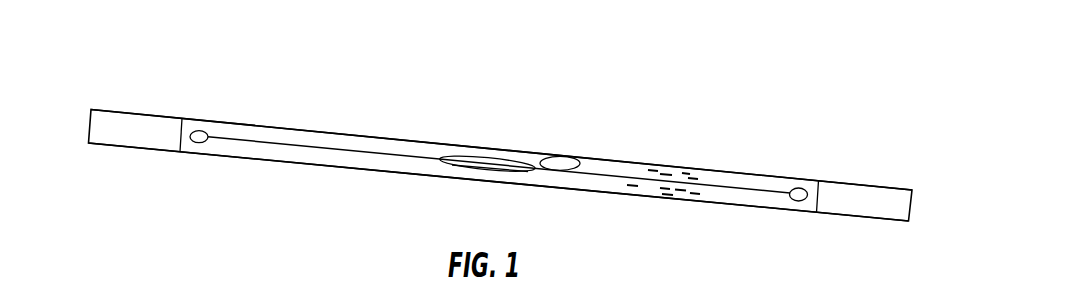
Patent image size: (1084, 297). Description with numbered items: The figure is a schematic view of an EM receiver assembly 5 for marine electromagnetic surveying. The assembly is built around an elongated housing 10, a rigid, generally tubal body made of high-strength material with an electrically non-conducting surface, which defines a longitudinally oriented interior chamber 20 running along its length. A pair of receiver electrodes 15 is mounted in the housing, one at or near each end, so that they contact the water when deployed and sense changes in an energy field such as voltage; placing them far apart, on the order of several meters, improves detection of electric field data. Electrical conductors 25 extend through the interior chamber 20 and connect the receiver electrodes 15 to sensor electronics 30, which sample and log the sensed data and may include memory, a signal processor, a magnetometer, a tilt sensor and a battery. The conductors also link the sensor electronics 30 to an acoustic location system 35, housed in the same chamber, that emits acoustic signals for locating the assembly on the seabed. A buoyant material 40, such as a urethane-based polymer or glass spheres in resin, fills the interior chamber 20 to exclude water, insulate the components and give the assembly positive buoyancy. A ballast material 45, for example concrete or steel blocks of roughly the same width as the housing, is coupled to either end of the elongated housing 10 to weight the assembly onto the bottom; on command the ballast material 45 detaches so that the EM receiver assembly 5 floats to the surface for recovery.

The EM receiver assembly 5 is at (660, 105).
The elongated housing 10 is at (692, 167).
The receiver electrodes 15 is at (199, 143).
The interior chamber 20 is at (374, 146).
The electrical conductors 25 is at (318, 150).
The sensor electronics 30 is at (487, 157).
The acoustic location system 35 is at (562, 156).
The buoyant material 40 is at (655, 193).
The ballast material 45 is at (137, 112).